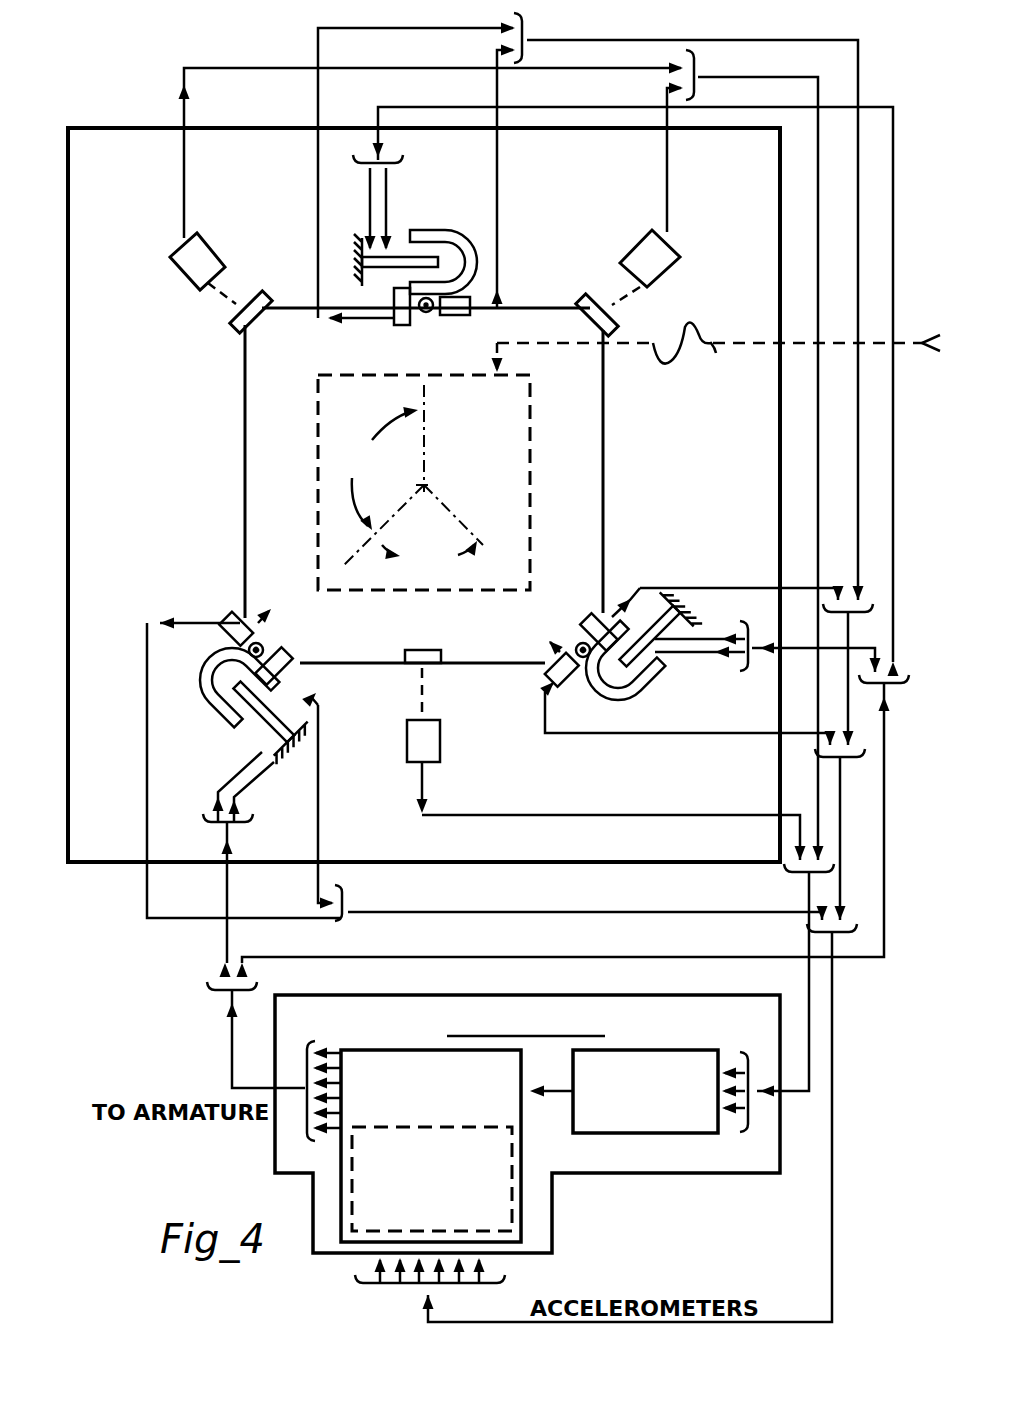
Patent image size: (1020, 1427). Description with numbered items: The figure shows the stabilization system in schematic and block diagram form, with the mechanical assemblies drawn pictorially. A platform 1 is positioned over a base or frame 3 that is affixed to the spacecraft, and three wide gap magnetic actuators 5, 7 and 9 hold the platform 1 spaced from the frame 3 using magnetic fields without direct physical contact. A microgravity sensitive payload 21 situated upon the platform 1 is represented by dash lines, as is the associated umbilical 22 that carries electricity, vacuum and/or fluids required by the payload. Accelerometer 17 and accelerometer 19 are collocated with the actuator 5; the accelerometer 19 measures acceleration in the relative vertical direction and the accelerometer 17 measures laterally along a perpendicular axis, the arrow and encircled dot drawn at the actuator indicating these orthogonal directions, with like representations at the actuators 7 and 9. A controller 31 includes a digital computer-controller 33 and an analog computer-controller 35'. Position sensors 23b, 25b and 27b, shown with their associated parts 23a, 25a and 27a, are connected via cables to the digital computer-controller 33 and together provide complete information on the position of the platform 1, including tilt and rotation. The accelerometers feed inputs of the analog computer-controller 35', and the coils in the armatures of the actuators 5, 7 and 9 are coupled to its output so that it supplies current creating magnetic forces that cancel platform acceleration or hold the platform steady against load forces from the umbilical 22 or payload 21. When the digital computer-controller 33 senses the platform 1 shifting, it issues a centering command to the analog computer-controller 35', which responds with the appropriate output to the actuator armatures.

The platform 1 is at (290, 426).
The base or frame 3 is at (565, 180).
The wide gap magnetic actuator 5 is at (446, 208).
The wide gap magnetic actuator 7 is at (657, 698).
The wide gap magnetic actuator 9 is at (210, 738).
The accelerometer 17 is at (465, 318).
The accelerometer 19 is at (401, 330).
The microgravity sensitive payload 21 is at (533, 422).
The umbilical 22 is at (716, 360).
The position sensor reflector 23a is at (234, 320).
The position sensor 23b is at (220, 247).
The position sensor reflector 25a is at (618, 312).
The position sensor 25b is at (626, 246).
The position sensor 27a is at (426, 650).
The position sensor 27b is at (440, 742).
The controller 31 is at (728, 1174).
The digital computer-controller 33 is at (708, 1134).
The analog controller 35' is at (440, 1162).